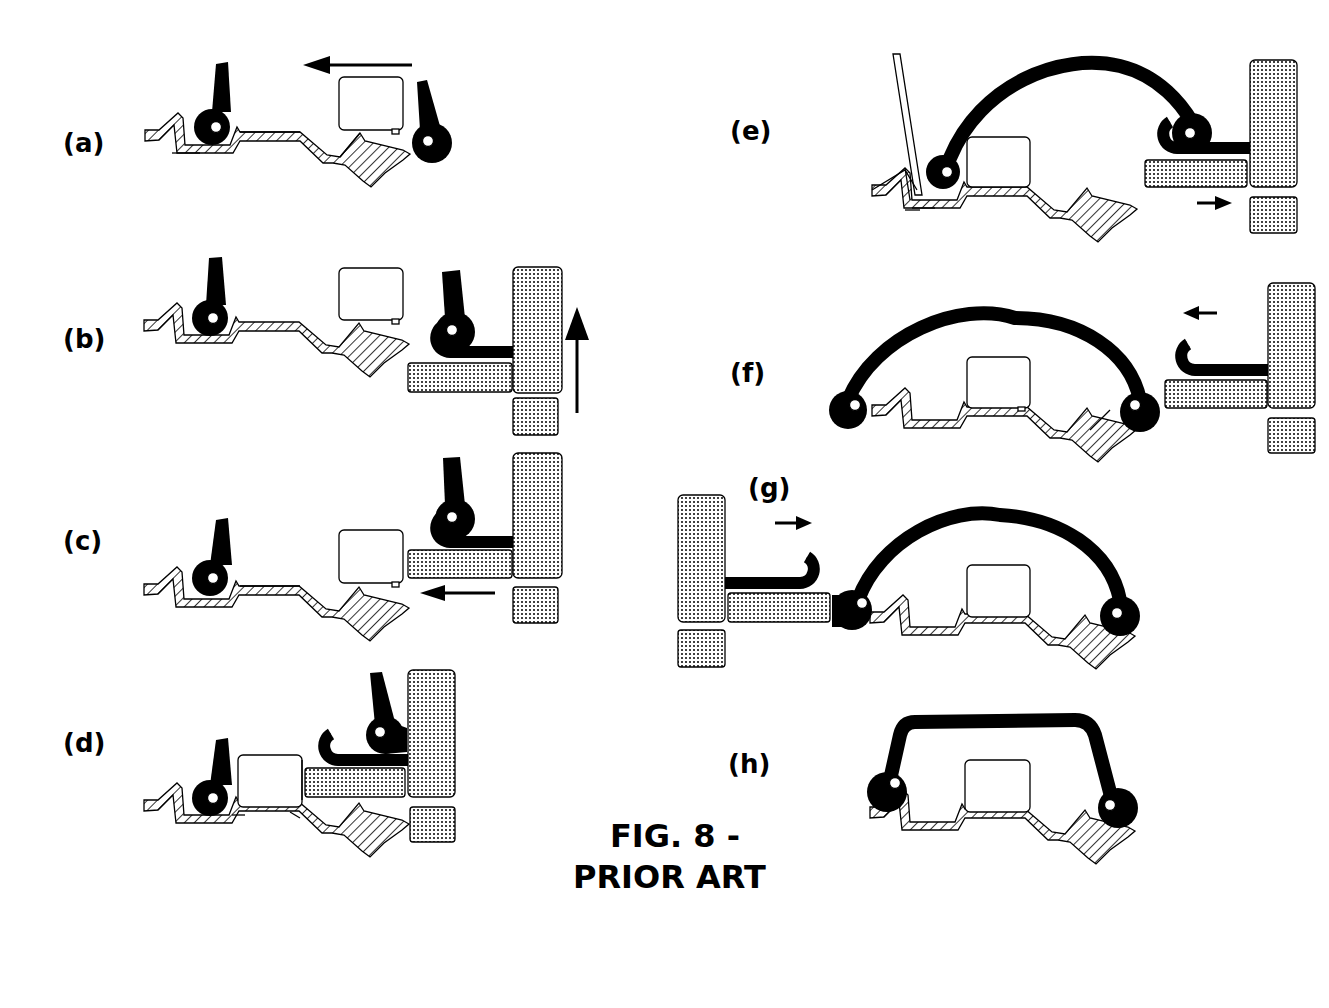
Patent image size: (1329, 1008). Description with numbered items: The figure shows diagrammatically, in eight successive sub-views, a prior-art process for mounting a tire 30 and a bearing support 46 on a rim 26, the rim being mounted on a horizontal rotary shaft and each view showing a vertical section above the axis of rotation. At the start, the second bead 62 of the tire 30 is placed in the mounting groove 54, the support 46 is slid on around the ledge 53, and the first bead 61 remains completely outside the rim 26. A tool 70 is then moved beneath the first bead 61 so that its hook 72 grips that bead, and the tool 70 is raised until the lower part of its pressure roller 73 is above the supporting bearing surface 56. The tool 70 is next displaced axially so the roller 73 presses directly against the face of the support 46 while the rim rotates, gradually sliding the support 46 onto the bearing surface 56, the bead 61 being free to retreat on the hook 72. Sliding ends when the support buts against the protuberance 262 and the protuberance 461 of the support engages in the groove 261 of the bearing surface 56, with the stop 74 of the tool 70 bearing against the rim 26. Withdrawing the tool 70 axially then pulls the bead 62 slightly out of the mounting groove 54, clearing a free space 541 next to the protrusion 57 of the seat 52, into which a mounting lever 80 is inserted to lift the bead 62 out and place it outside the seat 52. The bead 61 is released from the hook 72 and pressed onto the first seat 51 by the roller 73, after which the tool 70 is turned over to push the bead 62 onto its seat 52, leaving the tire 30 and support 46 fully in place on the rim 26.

The rim 26 is at (640, 501).
The tire 30 is at (699, 421).
The bearing support 46 is at (634, 444).
The first seat 51 is at (1108, 399).
The seat 52 is at (878, 163).
The ledge 53 is at (360, 163).
The mounting groove 54 is at (190, 153).
The free space 541 is at (920, 210).
The supporting bearing surface 56 is at (283, 133).
The protrusion 57 is at (907, 173).
The first bead 61 is at (788, 451).
The second bead 62 is at (559, 440).
The tool 70 is at (481, 408).
The hook 72 is at (781, 437).
The pressure roller 73 is at (786, 580).
The stop 74 is at (432, 824).
The mounting lever 80 is at (895, 75).
The groove 261 is at (293, 817).
The protuberance 262 is at (237, 820).
The protuberance 461 is at (293, 803).